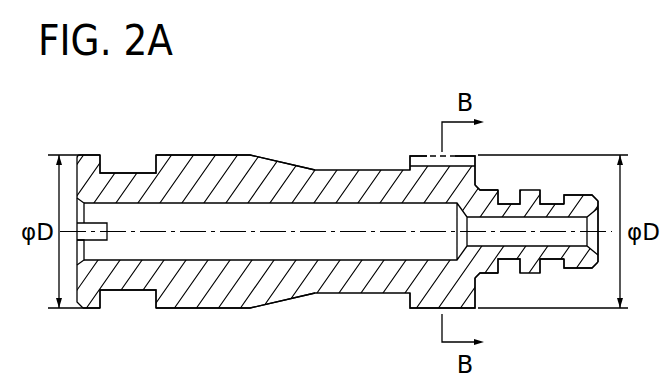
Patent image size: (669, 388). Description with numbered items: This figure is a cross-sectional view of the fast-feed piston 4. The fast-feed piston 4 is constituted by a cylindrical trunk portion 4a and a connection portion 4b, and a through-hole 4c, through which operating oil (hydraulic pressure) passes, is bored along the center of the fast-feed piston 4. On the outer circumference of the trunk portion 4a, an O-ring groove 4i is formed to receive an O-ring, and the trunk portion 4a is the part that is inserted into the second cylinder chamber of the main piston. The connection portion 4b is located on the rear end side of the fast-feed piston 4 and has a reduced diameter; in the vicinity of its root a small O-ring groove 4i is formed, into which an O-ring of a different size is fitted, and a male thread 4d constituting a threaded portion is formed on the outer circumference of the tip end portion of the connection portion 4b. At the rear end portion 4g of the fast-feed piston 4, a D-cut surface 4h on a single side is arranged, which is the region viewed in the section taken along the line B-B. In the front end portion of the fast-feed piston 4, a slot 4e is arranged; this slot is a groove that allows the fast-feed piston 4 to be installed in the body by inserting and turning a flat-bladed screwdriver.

The fast-feed piston 4 is at (347, 130).
The cylindrical trunk portion 4a is at (285, 146).
The connection portion 4b is at (553, 175).
The through-hole 4c is at (208, 262).
The male thread 4d is at (576, 268).
The slot 4e is at (108, 241).
The rear end portion 4g is at (463, 152).
The D-cut surface 4h is at (423, 155).
The O-ring groove 4i is at (120, 166).